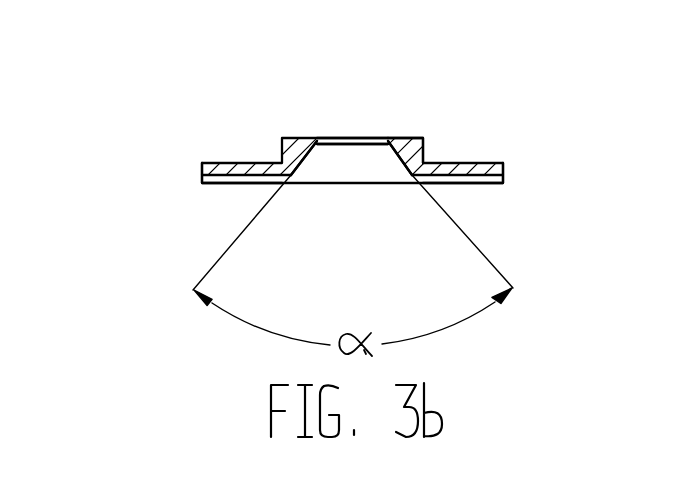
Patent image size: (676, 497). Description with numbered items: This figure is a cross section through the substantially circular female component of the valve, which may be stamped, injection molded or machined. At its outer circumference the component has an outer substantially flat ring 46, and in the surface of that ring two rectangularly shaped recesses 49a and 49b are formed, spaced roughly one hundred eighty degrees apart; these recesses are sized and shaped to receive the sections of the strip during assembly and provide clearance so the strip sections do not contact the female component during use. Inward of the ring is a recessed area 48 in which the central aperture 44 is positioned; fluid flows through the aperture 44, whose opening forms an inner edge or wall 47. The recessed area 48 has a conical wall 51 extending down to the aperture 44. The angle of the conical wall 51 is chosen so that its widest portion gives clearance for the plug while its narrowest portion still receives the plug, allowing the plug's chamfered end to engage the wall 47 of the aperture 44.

The aperture 44 is at (348, 138).
The outer substantially flat ring 46 is at (495, 162).
The inner edge or wall 47 is at (318, 147).
The recessed area 48 is at (422, 138).
The rectangularly shaped recess 49a is at (230, 183).
The rectangularly shaped recess 49b is at (458, 183).
The conical wall 51 is at (400, 156).